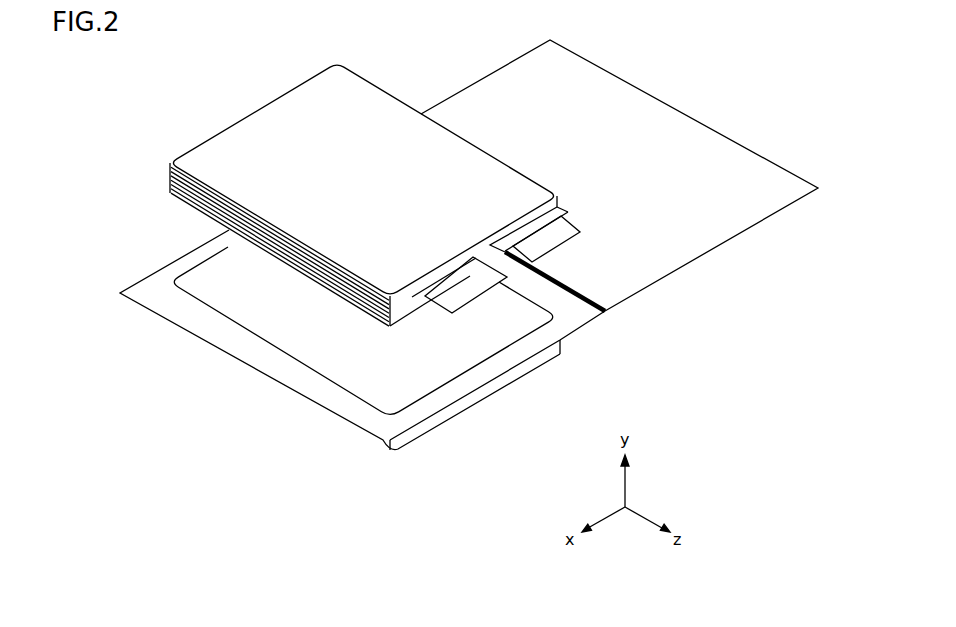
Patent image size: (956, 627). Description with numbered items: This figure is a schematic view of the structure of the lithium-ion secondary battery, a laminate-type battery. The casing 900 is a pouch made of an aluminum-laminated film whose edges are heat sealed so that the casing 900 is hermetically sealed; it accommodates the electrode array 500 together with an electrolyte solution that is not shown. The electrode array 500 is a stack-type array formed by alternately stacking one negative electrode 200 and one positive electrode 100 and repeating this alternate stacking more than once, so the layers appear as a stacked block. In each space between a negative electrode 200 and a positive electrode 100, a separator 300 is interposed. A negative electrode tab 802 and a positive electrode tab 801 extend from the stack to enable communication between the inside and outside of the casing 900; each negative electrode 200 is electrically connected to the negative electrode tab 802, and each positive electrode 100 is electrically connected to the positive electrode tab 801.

The electrode array 500 is at (315, 195).
The negative electrode 200 is at (171, 169).
The separator 300 is at (171, 179).
The positive electrode 100 is at (171, 190).
The positive electrode tab 801 is at (568, 240).
The negative electrode tab 802 is at (470, 292).
The casing 900 is at (723, 142).